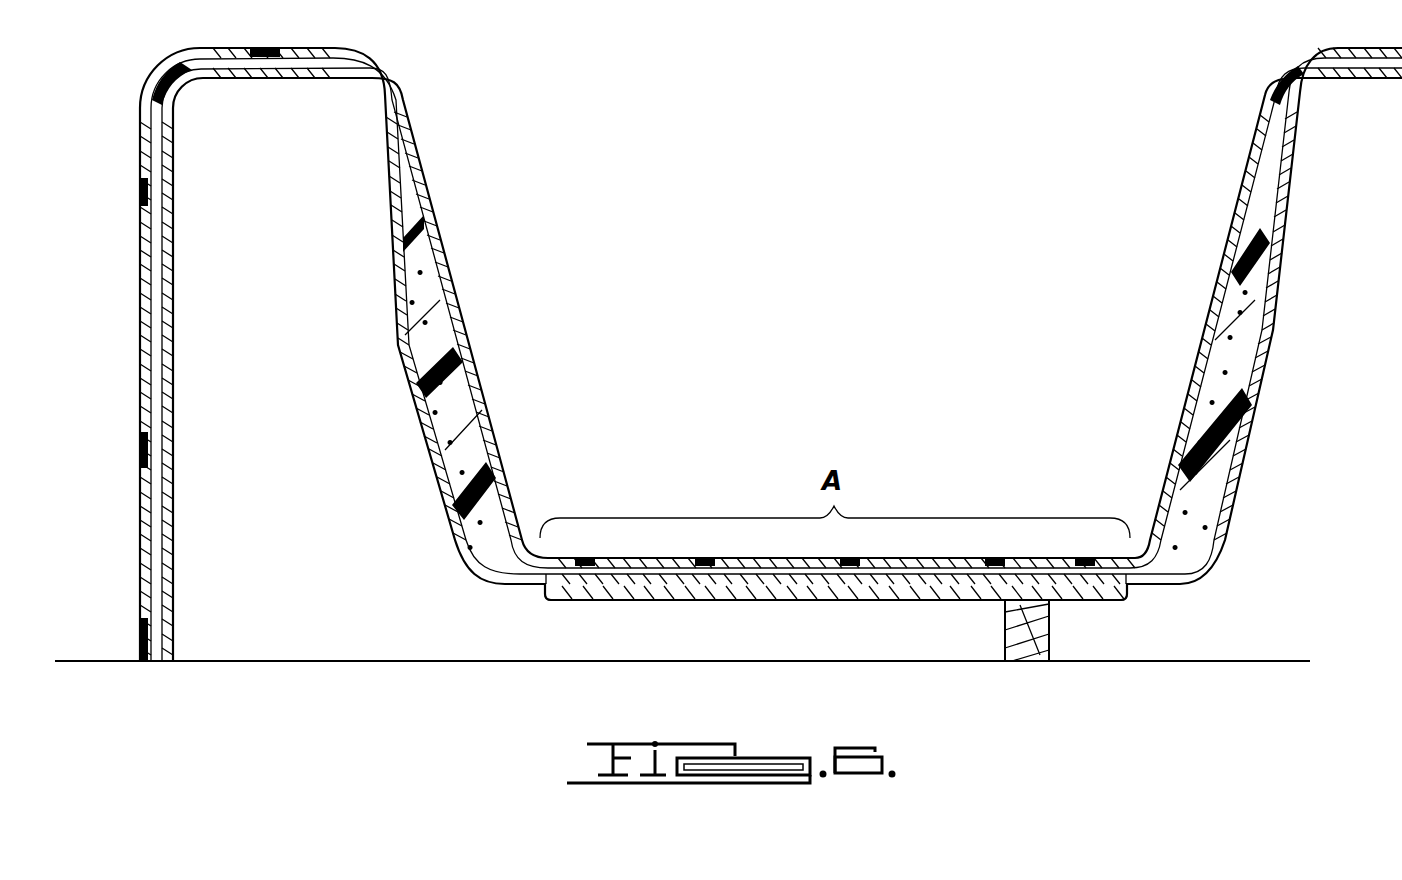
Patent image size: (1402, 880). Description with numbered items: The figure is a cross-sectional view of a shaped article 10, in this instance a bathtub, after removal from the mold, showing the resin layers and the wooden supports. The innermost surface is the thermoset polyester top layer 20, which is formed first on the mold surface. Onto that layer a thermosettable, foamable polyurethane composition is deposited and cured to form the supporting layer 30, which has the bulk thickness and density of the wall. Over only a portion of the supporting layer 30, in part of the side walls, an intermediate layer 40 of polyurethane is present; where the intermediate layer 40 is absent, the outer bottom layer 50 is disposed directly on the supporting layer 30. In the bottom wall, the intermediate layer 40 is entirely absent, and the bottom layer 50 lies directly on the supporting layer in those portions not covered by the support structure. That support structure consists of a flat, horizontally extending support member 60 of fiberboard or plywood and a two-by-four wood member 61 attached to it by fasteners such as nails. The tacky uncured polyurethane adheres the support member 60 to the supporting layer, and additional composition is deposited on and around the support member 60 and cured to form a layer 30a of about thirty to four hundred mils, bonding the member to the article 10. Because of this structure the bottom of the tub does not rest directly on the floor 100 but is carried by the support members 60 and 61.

The shaped article 10 is at (456, 229).
The thermoset polyester top layer 20 is at (1220, 284).
The supporting layer 30 is at (1072, 560).
The cured layer 30a is at (1103, 600).
The intermediate layer 40 is at (1250, 340).
The bottom layer 50 is at (1230, 525).
The support member 60 is at (607, 584).
The wood member 61 is at (1010, 625).
The floor 100 is at (333, 652).